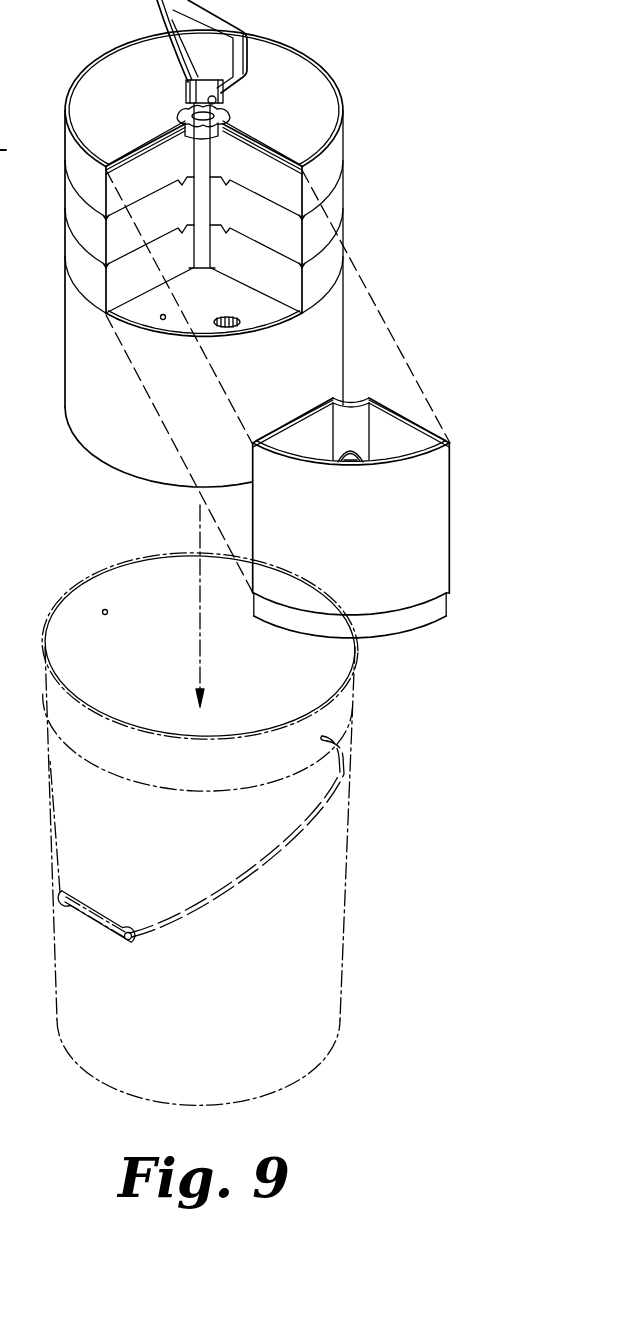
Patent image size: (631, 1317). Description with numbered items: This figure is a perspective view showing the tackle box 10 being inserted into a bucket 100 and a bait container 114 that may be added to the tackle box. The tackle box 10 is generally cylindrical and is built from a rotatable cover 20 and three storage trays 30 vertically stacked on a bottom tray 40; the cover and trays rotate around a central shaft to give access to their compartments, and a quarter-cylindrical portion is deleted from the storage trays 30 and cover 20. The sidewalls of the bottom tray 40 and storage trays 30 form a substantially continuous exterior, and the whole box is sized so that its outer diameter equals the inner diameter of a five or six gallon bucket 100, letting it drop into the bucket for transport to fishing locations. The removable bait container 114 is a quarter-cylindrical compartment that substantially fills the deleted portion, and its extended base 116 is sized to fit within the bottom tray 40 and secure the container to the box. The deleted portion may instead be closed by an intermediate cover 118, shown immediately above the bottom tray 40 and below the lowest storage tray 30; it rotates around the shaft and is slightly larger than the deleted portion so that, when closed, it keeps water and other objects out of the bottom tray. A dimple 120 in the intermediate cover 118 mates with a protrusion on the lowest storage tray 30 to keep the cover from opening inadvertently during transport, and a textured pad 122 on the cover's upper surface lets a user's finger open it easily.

The tackle box 10 is at (326, 57).
The rotatable cover 20 is at (322, 113).
The storage trays 30 is at (333, 163).
The bottom tray 40 is at (307, 355).
The bucket 100 is at (333, 851).
The bait container 114 is at (428, 565).
The extended base 116 is at (388, 625).
The intermediate cover 118 is at (250, 297).
The dimple 120 is at (163, 320).
The textured pad 122 is at (248, 326).